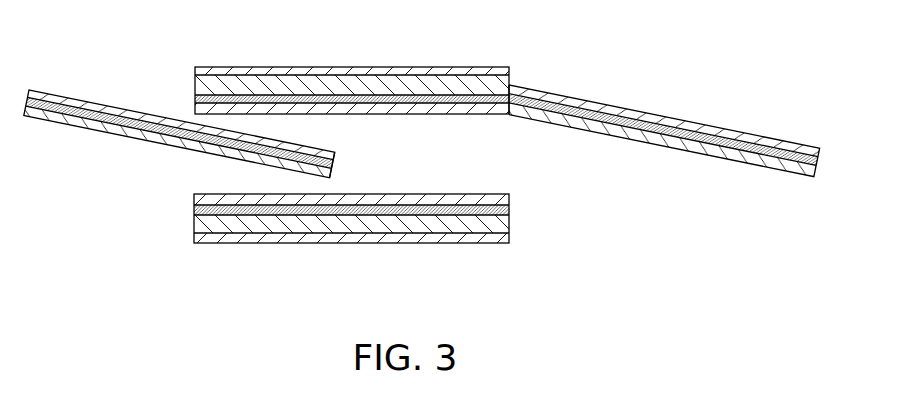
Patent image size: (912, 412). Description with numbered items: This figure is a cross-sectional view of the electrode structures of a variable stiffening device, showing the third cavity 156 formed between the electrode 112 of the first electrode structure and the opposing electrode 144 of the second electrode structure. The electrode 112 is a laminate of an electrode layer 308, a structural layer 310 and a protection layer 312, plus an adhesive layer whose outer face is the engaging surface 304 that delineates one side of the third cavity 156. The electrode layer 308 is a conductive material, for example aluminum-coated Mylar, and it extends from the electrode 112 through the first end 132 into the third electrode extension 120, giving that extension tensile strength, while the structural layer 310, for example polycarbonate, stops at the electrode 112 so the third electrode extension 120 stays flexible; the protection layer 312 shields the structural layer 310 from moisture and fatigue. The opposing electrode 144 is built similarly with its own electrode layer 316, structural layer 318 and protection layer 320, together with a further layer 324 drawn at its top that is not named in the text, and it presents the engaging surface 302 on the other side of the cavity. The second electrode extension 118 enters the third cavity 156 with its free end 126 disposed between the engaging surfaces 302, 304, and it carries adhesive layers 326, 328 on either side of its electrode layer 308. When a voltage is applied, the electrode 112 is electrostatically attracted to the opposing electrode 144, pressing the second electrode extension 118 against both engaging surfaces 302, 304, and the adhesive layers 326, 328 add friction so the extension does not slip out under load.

The electrode 112 is at (480, 73).
The second electrode extension 118 is at (42, 94).
The third electrode extension 120 is at (638, 112).
The free end 126 is at (337, 165).
The first end 132 is at (512, 100).
The opposing electrode 144 is at (500, 222).
The third cavity 156 is at (396, 170).
The engaging surface 302 is at (447, 195).
The engaging surface 304 is at (448, 116).
The electrode layer 308 is at (195, 100).
The structural layer 310 is at (350, 84).
The protection layer 312 is at (218, 72).
The electrode layer 316 is at (203, 209).
The structural layer 318 is at (355, 225).
The protection layer 320 is at (217, 238).
The top cover layer 324 is at (413, 200).
The adhesive layer 326 is at (56, 118).
The adhesive layer 328 is at (100, 105).